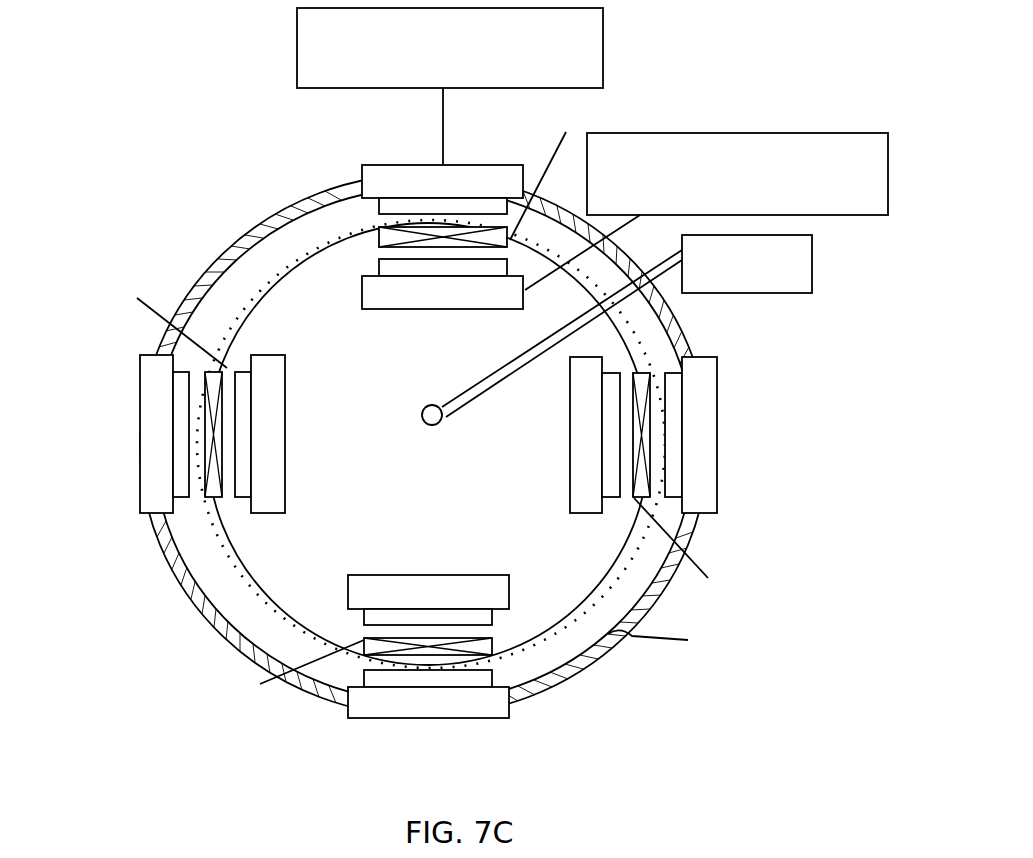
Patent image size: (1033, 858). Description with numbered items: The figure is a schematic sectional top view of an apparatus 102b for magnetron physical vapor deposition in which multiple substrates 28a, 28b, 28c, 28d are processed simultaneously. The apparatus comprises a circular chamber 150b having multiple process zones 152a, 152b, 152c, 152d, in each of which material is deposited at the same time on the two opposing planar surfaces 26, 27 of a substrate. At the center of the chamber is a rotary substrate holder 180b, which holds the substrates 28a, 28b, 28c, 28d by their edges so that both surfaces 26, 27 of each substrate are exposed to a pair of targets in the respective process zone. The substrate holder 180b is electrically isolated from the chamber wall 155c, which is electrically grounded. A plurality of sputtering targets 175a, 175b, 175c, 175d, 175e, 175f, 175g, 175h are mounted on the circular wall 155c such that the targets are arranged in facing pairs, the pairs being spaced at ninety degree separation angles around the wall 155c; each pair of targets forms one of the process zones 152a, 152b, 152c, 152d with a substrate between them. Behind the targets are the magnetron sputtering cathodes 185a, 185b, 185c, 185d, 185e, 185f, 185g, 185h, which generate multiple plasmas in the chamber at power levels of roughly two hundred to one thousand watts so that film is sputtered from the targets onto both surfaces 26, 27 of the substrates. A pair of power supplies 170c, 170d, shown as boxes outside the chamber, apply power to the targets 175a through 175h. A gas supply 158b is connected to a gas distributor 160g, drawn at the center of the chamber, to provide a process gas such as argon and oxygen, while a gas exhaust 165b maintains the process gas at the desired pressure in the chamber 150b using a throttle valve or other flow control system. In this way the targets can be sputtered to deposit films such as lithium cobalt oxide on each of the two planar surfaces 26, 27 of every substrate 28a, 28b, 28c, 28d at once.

The apparatus 102b is at (150, 60).
The circular chamber 150b is at (205, 220).
The gas exhaust 165b is at (262, 607).
The rotary substrate holder 180b is at (447, 463).
The chamber wall 155c is at (677, 640).
The power supply 170c is at (603, 46).
The power supply 170d is at (700, 133).
The gas supply 158b is at (812, 262).
The gas distributor 160g is at (442, 418).
The magnetron sputtering cathode 185a is at (458, 162).
The magnetron sputtering cathode 185b is at (447, 311).
The magnetron sputtering cathode 185c is at (728, 424).
The magnetron sputtering cathode 185d is at (563, 420).
The magnetron sputtering cathode 185e is at (480, 722).
The magnetron sputtering cathode 185f is at (414, 573).
The magnetron sputtering cathode 185g is at (138, 420).
The magnetron sputtering cathode 185h is at (300, 434).
The sputtering target 175a is at (380, 200).
The sputtering target 175b is at (364, 275).
The sputtering target 175c is at (680, 366).
The sputtering target 175d is at (603, 498).
The sputtering target 175e is at (496, 614).
The sputtering target 175f is at (363, 688).
The sputtering target 175g is at (252, 490).
The sputtering target 175h is at (173, 487).
The substrate 28a is at (379, 228).
The substrate 28b is at (650, 372).
The substrate 28c is at (492, 649).
The substrate 28d is at (212, 498).
The planar surface 26 is at (418, 233).
The planar surface 27 is at (377, 252).
The process zone 152a is at (553, 173).
The process zone 152b is at (700, 546).
The process zone 152c is at (279, 669).
The process zone 152d is at (163, 319).